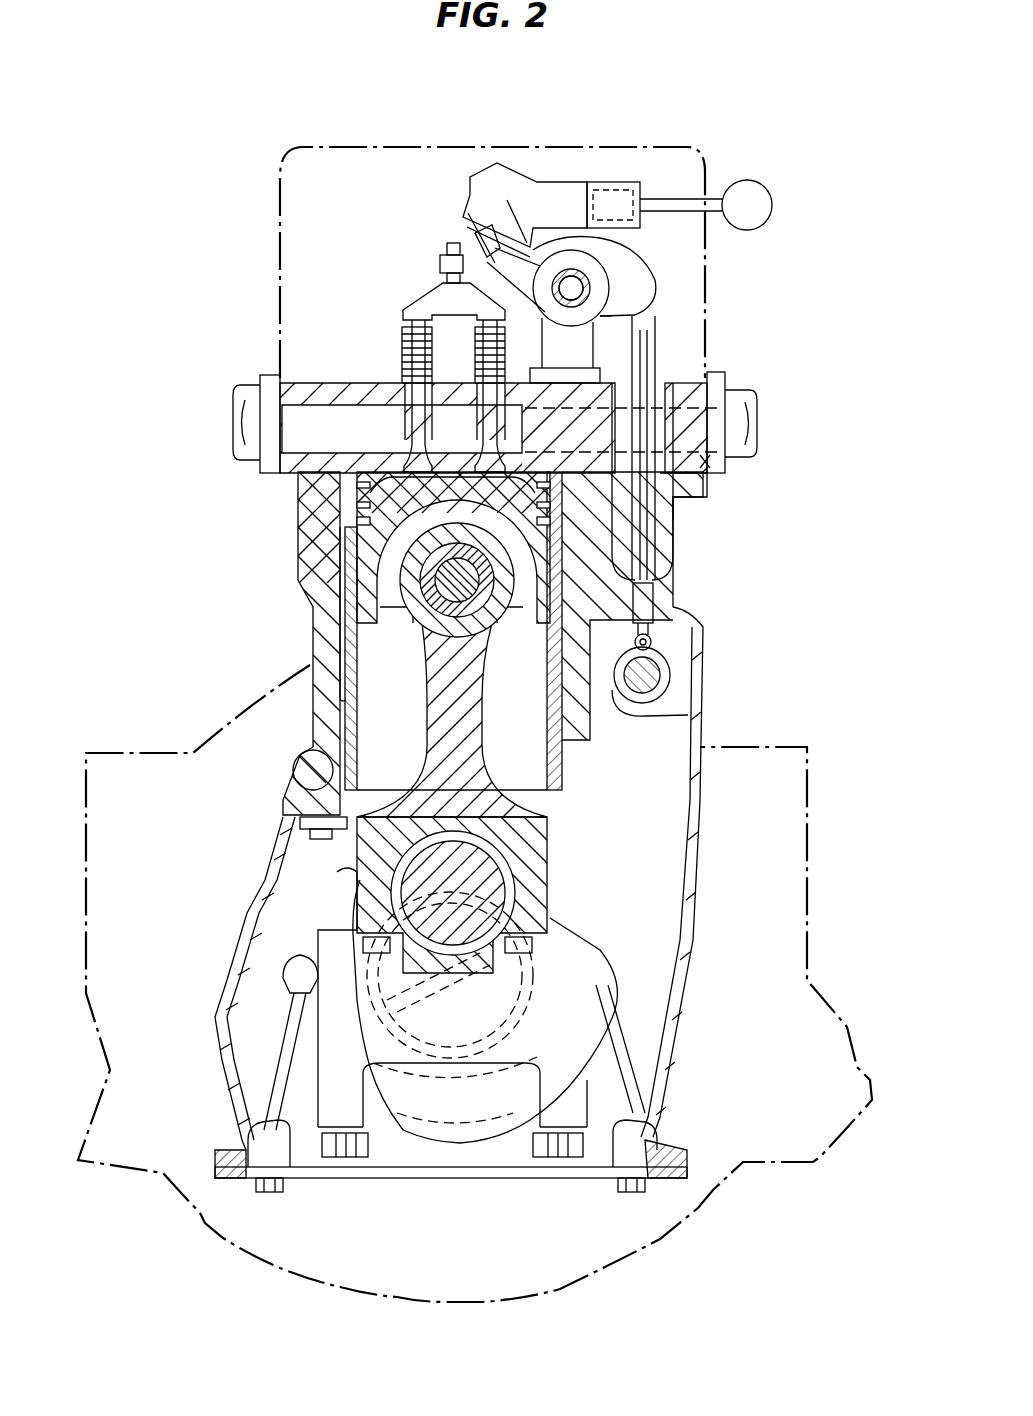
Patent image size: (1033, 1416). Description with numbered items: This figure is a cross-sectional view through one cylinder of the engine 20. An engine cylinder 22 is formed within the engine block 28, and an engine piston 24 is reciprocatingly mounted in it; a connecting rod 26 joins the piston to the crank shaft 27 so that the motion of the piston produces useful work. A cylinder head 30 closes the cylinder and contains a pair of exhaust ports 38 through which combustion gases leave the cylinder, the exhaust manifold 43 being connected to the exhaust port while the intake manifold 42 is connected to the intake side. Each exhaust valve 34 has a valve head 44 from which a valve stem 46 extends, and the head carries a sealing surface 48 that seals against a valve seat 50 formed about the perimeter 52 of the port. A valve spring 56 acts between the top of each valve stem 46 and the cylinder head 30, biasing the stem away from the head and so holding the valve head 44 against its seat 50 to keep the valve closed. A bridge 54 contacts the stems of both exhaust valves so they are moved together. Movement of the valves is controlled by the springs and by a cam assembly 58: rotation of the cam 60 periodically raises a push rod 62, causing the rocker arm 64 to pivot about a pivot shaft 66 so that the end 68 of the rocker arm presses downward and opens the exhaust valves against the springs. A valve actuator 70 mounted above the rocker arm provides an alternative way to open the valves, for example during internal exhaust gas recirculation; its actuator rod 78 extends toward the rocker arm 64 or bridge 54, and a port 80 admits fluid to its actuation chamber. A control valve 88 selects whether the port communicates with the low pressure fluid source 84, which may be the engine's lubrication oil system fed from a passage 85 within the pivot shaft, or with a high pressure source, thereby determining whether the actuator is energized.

The engine 20 is at (712, 568).
The engine cylinder 22 is at (358, 688).
The engine piston 24 is at (312, 648).
The connecting rod 26 is at (468, 752).
The crank shaft 27 is at (587, 960).
The engine block 28 is at (322, 727).
The cylinder head 30 is at (710, 475).
The exhaust valve 34 is at (412, 452).
The exhaust port 38 is at (520, 455).
The intake manifold 42 is at (693, 438).
The exhaust manifold 43 is at (262, 405).
The valve head 44 is at (345, 522).
The valve stem 46 is at (490, 395).
The sealing surface 48 is at (400, 572).
The valve seat 50 is at (425, 585).
The perimeter 52 is at (360, 490).
The bridge 54 is at (440, 300).
The valve spring 56 is at (476, 332).
The cam assembly 58 is at (680, 287).
The cam 60 is at (688, 717).
The push rod 62 is at (651, 641).
The rocker arm 64 is at (610, 267).
The pivot shaft 66 is at (577, 278).
The end of the rocker arm 68 is at (445, 258).
The valve actuator 70 is at (523, 168).
The actuator rod 78 is at (487, 235).
The port 80 is at (643, 197).
The low pressure fluid source 84 is at (748, 198).
The passage 85 is at (565, 280).
The control valve 88 is at (613, 195).